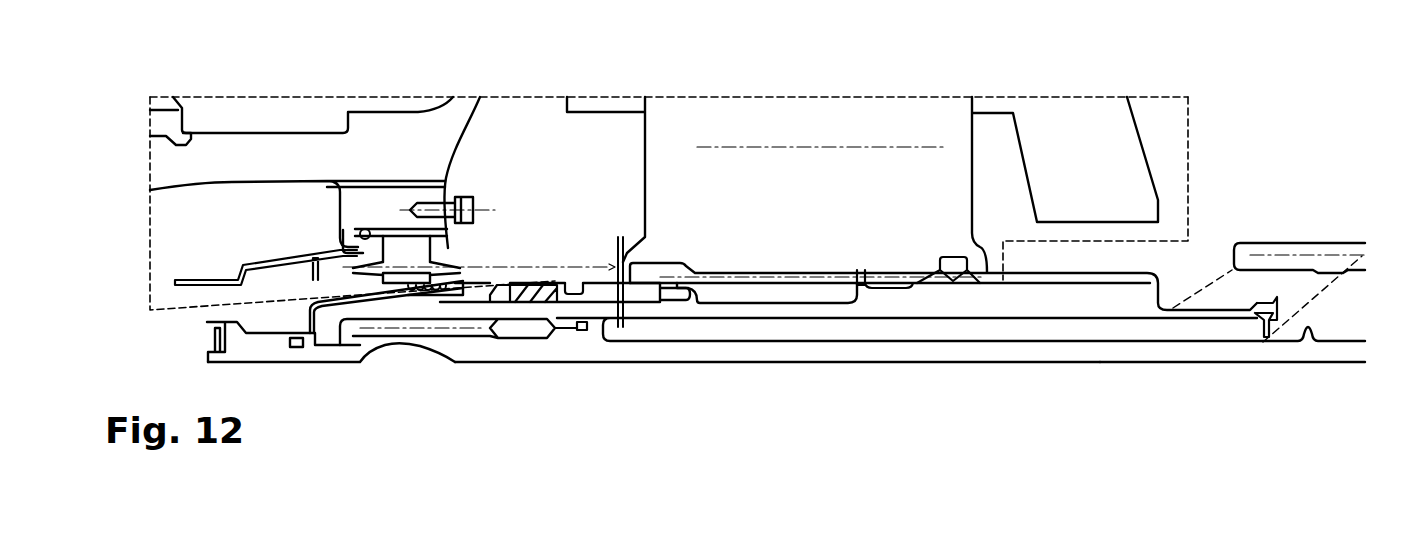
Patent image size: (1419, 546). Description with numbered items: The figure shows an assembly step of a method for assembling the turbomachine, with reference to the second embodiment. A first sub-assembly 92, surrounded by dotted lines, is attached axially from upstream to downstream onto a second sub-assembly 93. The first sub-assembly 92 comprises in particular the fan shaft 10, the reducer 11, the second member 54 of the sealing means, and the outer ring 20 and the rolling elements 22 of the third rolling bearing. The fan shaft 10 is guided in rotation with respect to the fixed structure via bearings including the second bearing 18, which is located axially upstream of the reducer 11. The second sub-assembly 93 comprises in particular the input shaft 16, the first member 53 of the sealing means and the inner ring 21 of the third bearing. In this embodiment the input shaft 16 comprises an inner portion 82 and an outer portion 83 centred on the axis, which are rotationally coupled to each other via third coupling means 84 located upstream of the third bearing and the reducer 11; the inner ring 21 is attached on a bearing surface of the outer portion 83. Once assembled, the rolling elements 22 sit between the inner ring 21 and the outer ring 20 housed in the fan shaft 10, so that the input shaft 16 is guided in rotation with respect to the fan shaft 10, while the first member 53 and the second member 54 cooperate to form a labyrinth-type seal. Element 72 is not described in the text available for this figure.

The fan shaft 10 is at (219, 188).
The reducer 11 is at (636, 157).
The input shaft 16 is at (1161, 372).
The second bearing 18 is at (282, 107).
The outer ring 20 is at (444, 253).
The inner ring 21 is at (598, 283).
The rolling elements 22 is at (395, 272).
The first member 53 is at (289, 323).
The second member 54 is at (256, 245).
The upper element 72 is at (890, 0).
The inner portion 82 is at (862, 352).
The outer portion 83 is at (940, 298).
The third coupling means 84 is at (407, 328).
The first sub-assembly 92 is at (222, 88).
The second sub-assembly 93 is at (1083, 377).